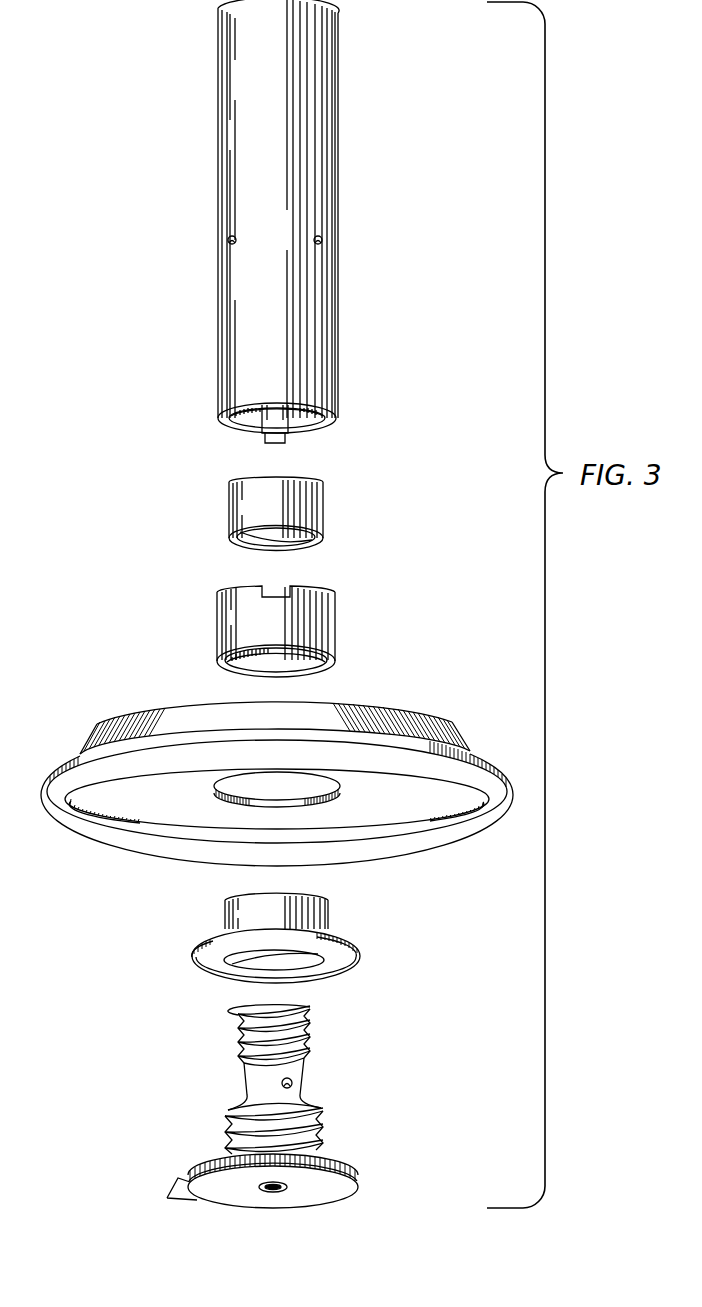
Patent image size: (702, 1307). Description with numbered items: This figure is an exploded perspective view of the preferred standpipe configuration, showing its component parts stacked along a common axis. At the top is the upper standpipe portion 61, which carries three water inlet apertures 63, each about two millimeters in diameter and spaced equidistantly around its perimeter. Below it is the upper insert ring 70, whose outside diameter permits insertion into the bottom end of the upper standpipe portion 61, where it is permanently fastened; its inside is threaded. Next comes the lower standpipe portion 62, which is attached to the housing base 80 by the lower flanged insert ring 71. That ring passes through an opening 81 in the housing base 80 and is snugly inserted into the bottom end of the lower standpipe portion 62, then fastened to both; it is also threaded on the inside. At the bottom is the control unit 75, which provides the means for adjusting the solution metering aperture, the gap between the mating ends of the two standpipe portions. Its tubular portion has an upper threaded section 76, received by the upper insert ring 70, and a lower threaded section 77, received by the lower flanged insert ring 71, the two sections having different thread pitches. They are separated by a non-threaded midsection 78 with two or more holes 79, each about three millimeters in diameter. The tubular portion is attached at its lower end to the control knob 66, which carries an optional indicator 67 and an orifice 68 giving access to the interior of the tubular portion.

The upper standpipe portion 61 is at (243, 152).
The water inlet apertures 63 is at (315, 238).
The upper insert ring 70 is at (242, 513).
The lower standpipe portion 62 is at (227, 630).
The housing base 80 is at (183, 720).
The opening 81 is at (243, 805).
The lower flanged insert ring 71 is at (193, 960).
The control unit 75 is at (252, 1079).
The upper threaded section 76 is at (238, 1022).
The non-threaded midsection 78 is at (248, 1075).
The holes 79 is at (292, 1081).
The lower threaded section 77 is at (227, 1123).
The control knob 66 is at (352, 1163).
The indicator 67 is at (168, 1188).
The orifice 68 is at (293, 1189).